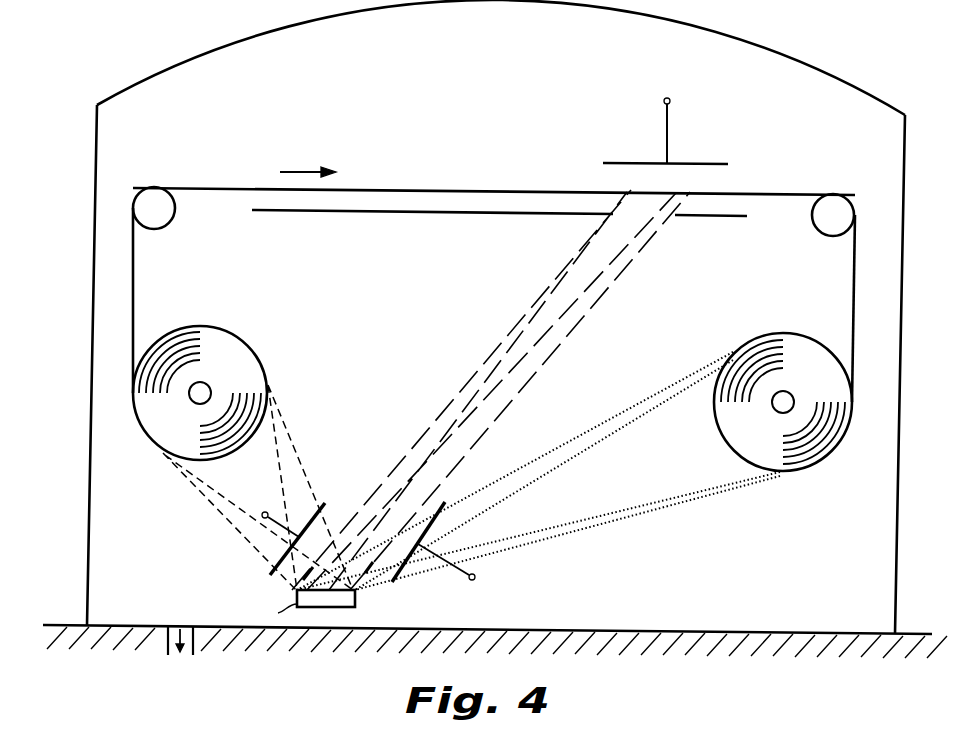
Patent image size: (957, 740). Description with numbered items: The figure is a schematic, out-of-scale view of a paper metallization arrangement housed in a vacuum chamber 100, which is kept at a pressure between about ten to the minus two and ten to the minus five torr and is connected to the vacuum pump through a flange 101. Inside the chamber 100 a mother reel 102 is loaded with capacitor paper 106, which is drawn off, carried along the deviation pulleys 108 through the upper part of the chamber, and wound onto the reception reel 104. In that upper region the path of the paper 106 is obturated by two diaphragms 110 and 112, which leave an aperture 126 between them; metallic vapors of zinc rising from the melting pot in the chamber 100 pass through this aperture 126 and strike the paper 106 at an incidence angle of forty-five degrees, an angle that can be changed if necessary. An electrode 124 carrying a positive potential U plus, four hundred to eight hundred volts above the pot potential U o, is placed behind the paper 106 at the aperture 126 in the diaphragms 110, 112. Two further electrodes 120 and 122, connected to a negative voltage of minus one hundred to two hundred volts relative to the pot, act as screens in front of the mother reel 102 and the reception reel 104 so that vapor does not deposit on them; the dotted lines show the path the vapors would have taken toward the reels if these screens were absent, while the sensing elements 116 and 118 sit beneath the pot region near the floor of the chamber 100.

The vacuum chamber 100 is at (905, 136).
The flange 101 is at (175, 623).
The mother reel 102 is at (232, 345).
The right roller with reflective markings 104 is at (818, 452).
The capacitor paper 106 is at (205, 188).
The belt deflection rollers 108 is at (152, 203).
The diaphragm 110 is at (364, 213).
The diaphragm 112 is at (722, 217).
The photodetector 116 is at (355, 603).
The light source 118 is at (296, 590).
The electrode 120 is at (285, 552).
The electrode 122 is at (403, 570).
The electrode 124 is at (694, 162).
The aperture 126 is at (643, 216).